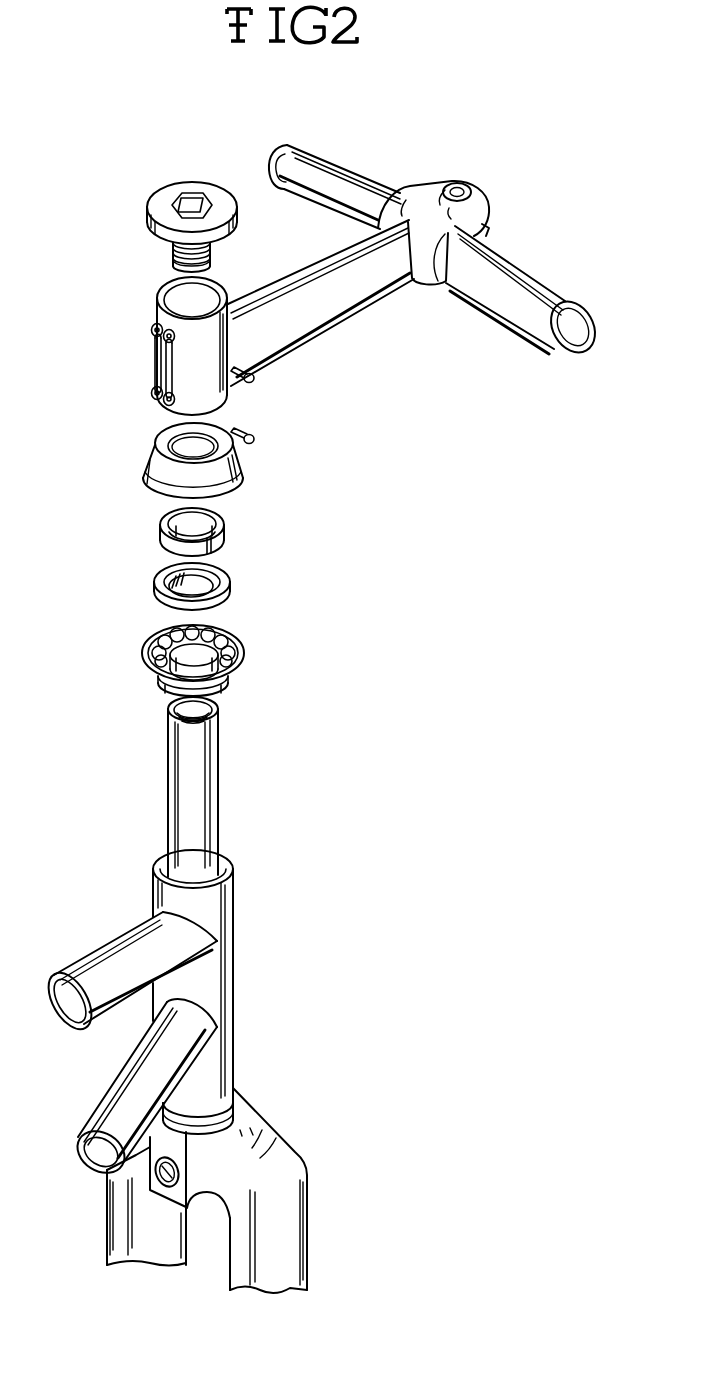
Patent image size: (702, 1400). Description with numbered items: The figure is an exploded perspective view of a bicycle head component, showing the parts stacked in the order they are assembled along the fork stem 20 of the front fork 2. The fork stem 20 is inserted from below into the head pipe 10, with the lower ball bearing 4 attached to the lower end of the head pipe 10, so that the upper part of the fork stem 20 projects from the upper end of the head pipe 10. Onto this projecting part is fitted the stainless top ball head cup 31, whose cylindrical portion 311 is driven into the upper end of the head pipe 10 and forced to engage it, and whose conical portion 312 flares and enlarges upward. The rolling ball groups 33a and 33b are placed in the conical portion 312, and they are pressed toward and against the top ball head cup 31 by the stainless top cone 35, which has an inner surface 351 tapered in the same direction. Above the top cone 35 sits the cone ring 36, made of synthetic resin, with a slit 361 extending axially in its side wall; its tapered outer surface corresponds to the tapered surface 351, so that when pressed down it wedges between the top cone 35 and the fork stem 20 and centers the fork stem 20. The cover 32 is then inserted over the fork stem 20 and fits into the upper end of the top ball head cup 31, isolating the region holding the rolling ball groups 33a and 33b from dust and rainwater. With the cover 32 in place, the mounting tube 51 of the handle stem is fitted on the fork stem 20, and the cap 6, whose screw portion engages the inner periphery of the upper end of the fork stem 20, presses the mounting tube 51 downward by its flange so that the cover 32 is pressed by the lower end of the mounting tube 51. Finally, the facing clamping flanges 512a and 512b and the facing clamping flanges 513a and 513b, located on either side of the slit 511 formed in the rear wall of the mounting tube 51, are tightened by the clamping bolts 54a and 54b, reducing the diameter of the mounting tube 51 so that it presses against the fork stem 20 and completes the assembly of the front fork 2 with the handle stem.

The cap 6 is at (168, 187).
The mounting tube 51 is at (160, 292).
The slit 511 is at (152, 325).
The clamping flange 512a is at (151, 331).
The clamping flange 512b is at (153, 341).
The clamping flange 513a is at (151, 393).
The clamping flange 513b is at (165, 406).
The clamping bolt 54a is at (254, 382).
The clamping bolt 54b is at (255, 440).
The cover 32 is at (241, 468).
The cone ring 36 is at (201, 536).
The slit 361 is at (213, 553).
The top cone 35 is at (201, 586).
The inner surface 351 is at (203, 578).
The rolling ball group 33a is at (235, 642).
The rolling ball group 33b is at (163, 642).
The top ball head cup 31 is at (207, 660).
The conical portion 312 is at (244, 655).
The cylindrical portion 311 is at (216, 689).
The fork stem 20 is at (183, 806).
The head pipe 10 is at (234, 940).
The lower ball bearing 4 is at (236, 1109).
The front fork 2 is at (273, 1142).